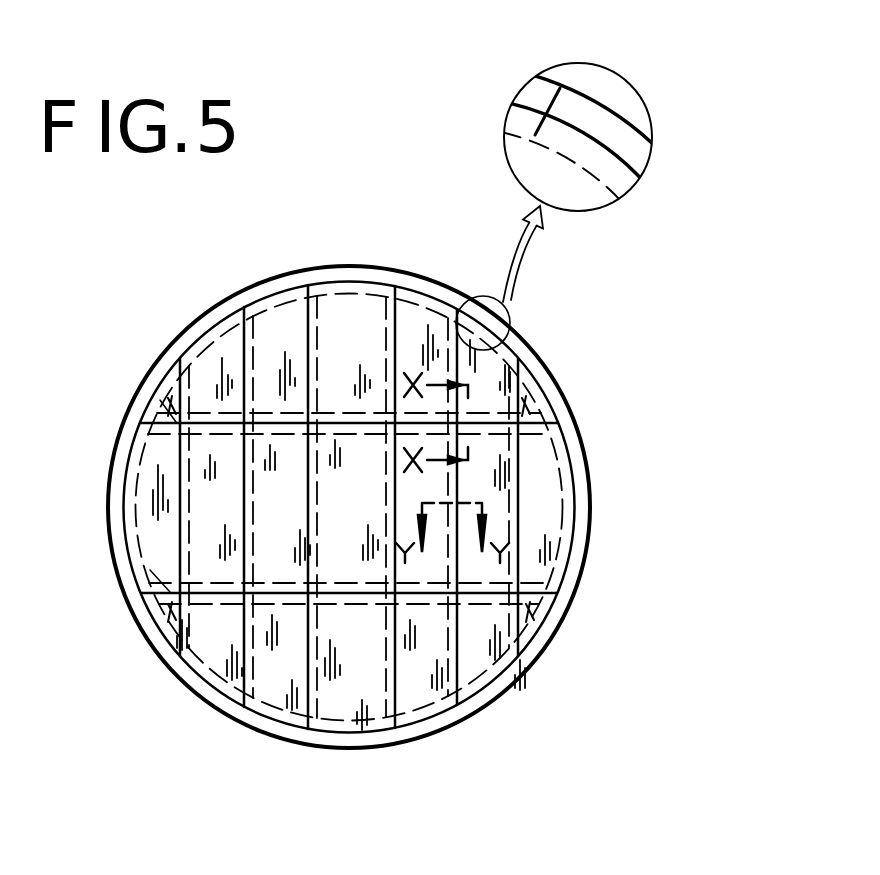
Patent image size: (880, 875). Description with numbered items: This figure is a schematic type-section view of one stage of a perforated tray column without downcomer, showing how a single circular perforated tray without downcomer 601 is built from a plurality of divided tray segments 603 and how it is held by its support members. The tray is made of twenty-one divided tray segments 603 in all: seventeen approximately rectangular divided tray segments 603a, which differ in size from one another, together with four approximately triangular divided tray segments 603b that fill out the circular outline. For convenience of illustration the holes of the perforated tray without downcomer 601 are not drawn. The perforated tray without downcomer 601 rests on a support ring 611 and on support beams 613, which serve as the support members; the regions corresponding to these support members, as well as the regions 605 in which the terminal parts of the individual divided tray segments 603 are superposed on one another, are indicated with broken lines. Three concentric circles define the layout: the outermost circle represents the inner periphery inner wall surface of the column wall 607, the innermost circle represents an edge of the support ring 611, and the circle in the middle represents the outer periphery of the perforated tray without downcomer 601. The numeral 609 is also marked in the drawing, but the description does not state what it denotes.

The perforated tray without downcomer 601 is at (540, 375).
The divided tray segments 603 is at (538, 553).
The approximately rectangular divided tray segments 603a is at (292, 690).
The approximately triangular divided tray segments 603b is at (172, 407).
The regions in which terminal parts of divided tray segments are superposed 605 is at (198, 368).
The column wall 607 is at (592, 485).
The edge exclusion region 609 is at (523, 640).
The support ring 611 is at (451, 296).
The support beams 613 is at (173, 410).